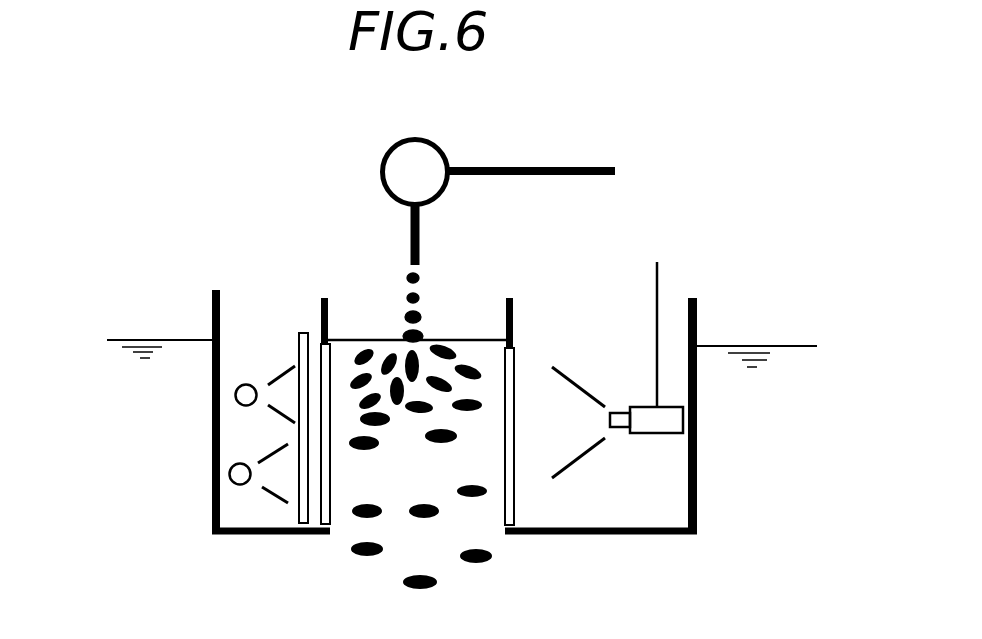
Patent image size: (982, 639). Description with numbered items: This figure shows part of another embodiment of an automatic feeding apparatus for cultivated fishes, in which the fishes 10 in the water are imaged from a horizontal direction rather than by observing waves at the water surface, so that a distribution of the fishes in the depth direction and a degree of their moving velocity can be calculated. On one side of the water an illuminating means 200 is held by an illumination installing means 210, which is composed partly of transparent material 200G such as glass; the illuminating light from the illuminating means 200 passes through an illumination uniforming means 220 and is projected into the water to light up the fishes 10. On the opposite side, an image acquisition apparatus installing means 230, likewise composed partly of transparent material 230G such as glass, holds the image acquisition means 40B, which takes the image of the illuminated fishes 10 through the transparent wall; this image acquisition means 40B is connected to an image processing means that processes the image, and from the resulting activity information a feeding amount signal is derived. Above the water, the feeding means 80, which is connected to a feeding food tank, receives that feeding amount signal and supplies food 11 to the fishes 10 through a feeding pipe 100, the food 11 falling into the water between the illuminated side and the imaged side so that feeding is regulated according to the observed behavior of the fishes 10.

The feeding means 80 is at (416, 139).
The feeding pipe 100 is at (419, 255).
The food 11 is at (423, 315).
The illumination installing means 210 is at (212, 396).
The illuminating means 200 is at (212, 490).
The illumination uniforming means 220 is at (305, 332).
The transparent material 200G is at (329, 498).
The image acquisition apparatus installing means 230 is at (697, 473).
The transparent material 230G is at (515, 373).
The image acquisition means 40B is at (665, 433).
The fishes 10 is at (368, 556).